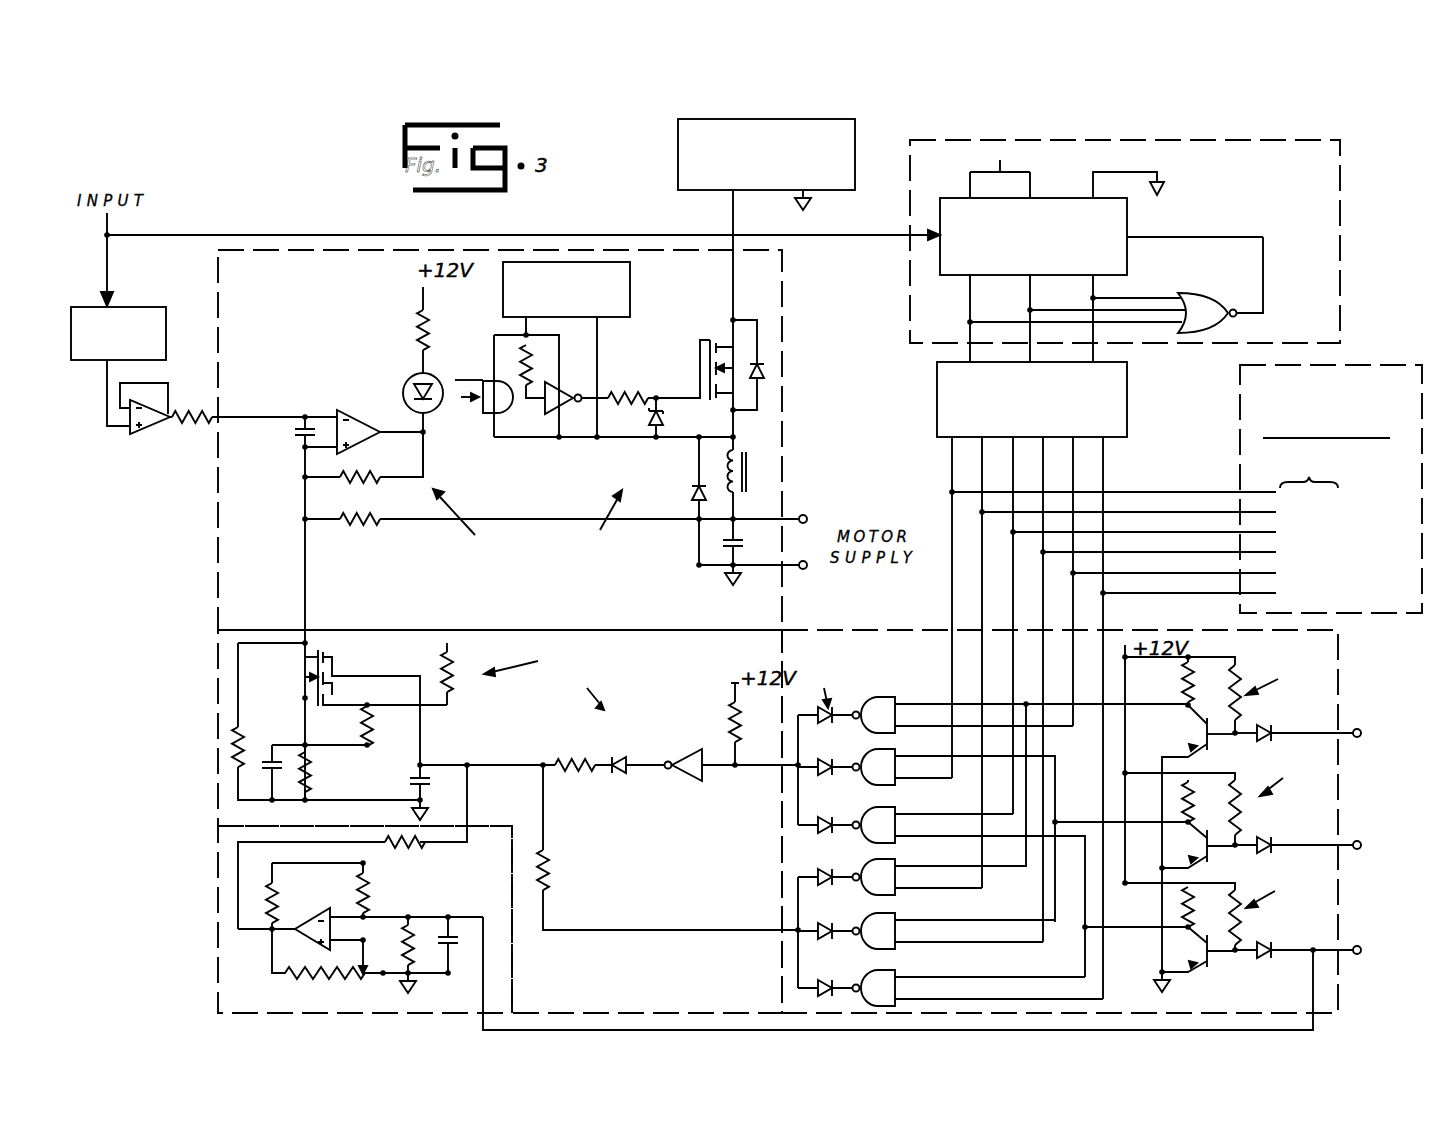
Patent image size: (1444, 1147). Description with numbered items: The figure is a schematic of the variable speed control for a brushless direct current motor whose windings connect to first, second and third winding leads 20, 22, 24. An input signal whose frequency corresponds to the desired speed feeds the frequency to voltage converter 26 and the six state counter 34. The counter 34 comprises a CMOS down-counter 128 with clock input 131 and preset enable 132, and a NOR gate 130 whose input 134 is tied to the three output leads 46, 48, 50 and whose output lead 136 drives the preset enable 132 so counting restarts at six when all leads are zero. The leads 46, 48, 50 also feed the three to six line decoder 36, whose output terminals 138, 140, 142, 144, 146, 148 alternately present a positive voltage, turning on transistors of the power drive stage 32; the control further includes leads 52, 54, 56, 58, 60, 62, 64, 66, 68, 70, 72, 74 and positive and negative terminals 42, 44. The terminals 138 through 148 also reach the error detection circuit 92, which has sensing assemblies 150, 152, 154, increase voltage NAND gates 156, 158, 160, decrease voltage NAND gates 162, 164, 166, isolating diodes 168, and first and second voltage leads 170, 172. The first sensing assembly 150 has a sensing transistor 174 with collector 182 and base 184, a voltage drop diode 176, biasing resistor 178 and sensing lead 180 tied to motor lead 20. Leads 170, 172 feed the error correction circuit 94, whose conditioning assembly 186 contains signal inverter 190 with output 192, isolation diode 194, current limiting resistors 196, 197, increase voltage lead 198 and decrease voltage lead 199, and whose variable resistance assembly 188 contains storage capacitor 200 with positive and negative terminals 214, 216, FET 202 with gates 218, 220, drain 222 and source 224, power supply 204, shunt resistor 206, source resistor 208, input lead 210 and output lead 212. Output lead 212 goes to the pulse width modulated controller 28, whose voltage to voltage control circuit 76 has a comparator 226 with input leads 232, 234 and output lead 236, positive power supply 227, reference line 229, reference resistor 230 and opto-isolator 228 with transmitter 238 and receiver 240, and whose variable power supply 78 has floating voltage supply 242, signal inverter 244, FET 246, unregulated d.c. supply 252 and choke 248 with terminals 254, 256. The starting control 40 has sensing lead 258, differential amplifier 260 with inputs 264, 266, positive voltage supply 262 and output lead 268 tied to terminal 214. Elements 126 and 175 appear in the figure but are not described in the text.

The first winding lead 20 is at (1362, 742).
The second winding lead 22 is at (1362, 854).
The third winding lead 24 is at (1362, 959).
The frequency to voltage converter 26 is at (142, 306).
The pulse width modulated controller 28 is at (216, 462).
The power drive stage 32 is at (1360, 366).
The six state counter 34 is at (1340, 232).
The three to six line decoder 36 is at (1128, 398).
The starting control 40 is at (216, 888).
The positive terminal 42 is at (804, 512).
The negative terminal 44 is at (803, 575).
The output lead 46 is at (1095, 286).
The output lead 48 is at (1032, 292).
The output lead 50 is at (972, 292).
The lead 52 is at (1178, 492).
The lead 54 is at (1178, 512).
The lead 56 is at (1178, 532).
The lead 58 is at (1178, 552).
The lead 60 is at (1178, 573).
The lead 62 is at (1178, 593).
The lead 64 is at (1104, 616).
The lead 66 is at (1085, 606).
The lead 68 is at (1055, 606).
The lead 70 is at (1025, 606).
The lead 72 is at (994, 606).
The lead 74 is at (964, 606).
The voltage to voltage control circuit 76 is at (467, 525).
The variable power supply 78 is at (596, 526).
The error detection circuit 92 is at (1342, 661).
The error correction circuit 94 is at (216, 714).
The NOR gate output 126 is at (1228, 328).
The down-counter 128 is at (1052, 208).
The NOR gate 130 is at (934, 236).
The clock input 131 is at (1203, 313).
The preset enable 132 is at (1130, 237).
The input 134 is at (1176, 302).
The output lead 136 is at (1245, 311).
The output terminal 138 is at (1105, 440).
The output terminal 140 is at (1076, 440).
The output terminal 142 is at (1046, 440).
The output terminal 144 is at (1016, 440).
The output terminal 146 is at (985, 440).
The output terminal 148 is at (955, 440).
The first sensing assembly 150 is at (1283, 676).
The second sensing assembly 152 is at (1256, 813).
The third sensing assembly 154 is at (1253, 930).
The first increase voltage NAND gate 156 is at (993, 715).
The second increase voltage NAND gate 158 is at (926, 835).
The third increase voltage NAND gate 160 is at (941, 892).
The first decrease voltage NAND gate 162 is at (912, 799).
The second decrease voltage NAND gate 164 is at (926, 931).
The third decrease voltage NAND gate 166 is at (950, 988).
The isolating diodes 168 is at (823, 823).
The first voltage lead 170 is at (796, 770).
The second voltage lead 172 is at (796, 928).
The sensing transistor 174 is at (1200, 728).
The filter capacitor 175 is at (753, 552).
The voltage drop diode 176 is at (1266, 727).
The biasing resistor 178 is at (1242, 673).
The sensing lead 180 is at (1332, 733).
The collector 182 is at (1186, 706).
The base 184 is at (1208, 743).
The conditioning assembly 186 is at (585, 689).
The variable resistance assembly 188 is at (531, 657).
The signal inverter 190 is at (692, 754).
The output 192 is at (663, 761).
The isolation diode 194 is at (620, 775).
The current limiting resistor 196 is at (566, 764).
The current limiting resistor 197 is at (548, 868).
The increase voltage lead 198 is at (548, 771).
The decrease voltage lead 199 is at (546, 808).
The storage capacitor 200 is at (427, 782).
The field effect transistor 202 is at (309, 678).
The power supply 204 is at (446, 652).
The shunt resistor 206 is at (236, 750).
The source resistor 208 is at (310, 760).
The input lead 210 is at (496, 764).
The output lead 212 is at (309, 641).
The positive terminal 214 is at (441, 764).
The negative terminal 216 is at (410, 798).
The first gate 218 is at (336, 699).
The second gate 220 is at (334, 664).
The drain 222 is at (314, 654).
The source 224 is at (303, 712).
The comparator 226 is at (370, 409).
The positive power supply 227 is at (420, 288).
The opto-isolator 228 is at (477, 372).
The reference line 229 is at (326, 522).
The reference resistor 230 is at (372, 522).
The positive input lead 232 is at (329, 449).
The negative input lead 234 is at (333, 416).
The output lead 236 is at (403, 436).
The transmitter 238 is at (429, 409).
The receiver 240 is at (498, 390).
The floating voltage supply 242 is at (631, 286).
The signal inverter 244 is at (578, 403).
The FET 246 is at (699, 347).
The choke 248 is at (750, 463).
The unregulated d.c. supply 252 is at (678, 166).
The input terminal 254 is at (743, 445).
The output terminal 256 is at (742, 496).
The sensing lead 258 is at (488, 1000).
The differential amplifier 260 is at (291, 931).
The positive voltage supply 262 is at (368, 870).
The positive input 264 is at (343, 964).
The negative input 266 is at (333, 909).
The output lead 268 is at (240, 872).